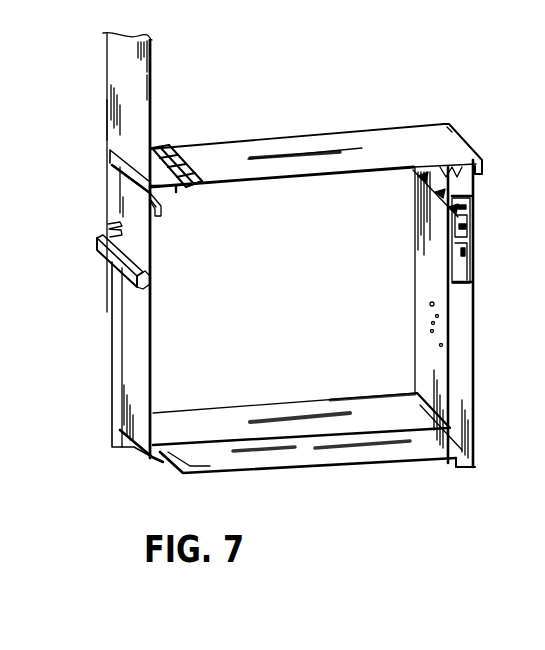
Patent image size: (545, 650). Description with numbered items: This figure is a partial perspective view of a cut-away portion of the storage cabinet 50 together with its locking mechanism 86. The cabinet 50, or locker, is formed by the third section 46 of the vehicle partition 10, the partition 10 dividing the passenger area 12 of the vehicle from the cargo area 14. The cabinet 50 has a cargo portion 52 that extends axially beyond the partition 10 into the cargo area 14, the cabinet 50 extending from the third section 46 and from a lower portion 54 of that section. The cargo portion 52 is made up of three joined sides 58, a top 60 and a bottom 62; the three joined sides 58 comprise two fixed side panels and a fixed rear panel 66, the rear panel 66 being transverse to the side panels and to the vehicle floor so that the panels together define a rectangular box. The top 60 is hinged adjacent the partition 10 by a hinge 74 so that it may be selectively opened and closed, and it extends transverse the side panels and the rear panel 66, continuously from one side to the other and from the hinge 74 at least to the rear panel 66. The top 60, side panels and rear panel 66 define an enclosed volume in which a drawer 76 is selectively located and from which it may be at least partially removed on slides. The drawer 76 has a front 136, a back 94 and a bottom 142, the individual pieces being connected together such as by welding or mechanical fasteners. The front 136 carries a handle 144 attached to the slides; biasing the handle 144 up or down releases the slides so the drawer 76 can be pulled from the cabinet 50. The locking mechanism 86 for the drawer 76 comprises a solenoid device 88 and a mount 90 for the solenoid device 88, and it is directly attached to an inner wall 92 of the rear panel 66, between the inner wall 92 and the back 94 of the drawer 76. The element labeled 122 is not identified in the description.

The vehicle partition 10 is at (152, 48).
The passenger area 12 is at (92, 87).
The cargo area 14 is at (412, 103).
The third section 46 is at (133, 85).
The cabinet 50 is at (280, 140).
The cargo portion 52 is at (434, 122).
The lower portion 54 is at (96, 120).
The three joined sides 58 is at (477, 188).
The top 60 is at (340, 140).
The bottom 62 is at (296, 476).
The rear panel 66 is at (478, 386).
The hinge 74 is at (160, 160).
The drawer 76 is at (128, 197).
The locking mechanism 86 is at (469, 223).
The solenoid device 88 is at (455, 232).
The mount 90 is at (471, 268).
The inner wall 92 is at (468, 343).
The back 94 is at (421, 354).
The bottom edge 122 is at (450, 371).
The front 136 is at (128, 352).
The bottom 142 is at (258, 412).
The handle 144 is at (100, 245).